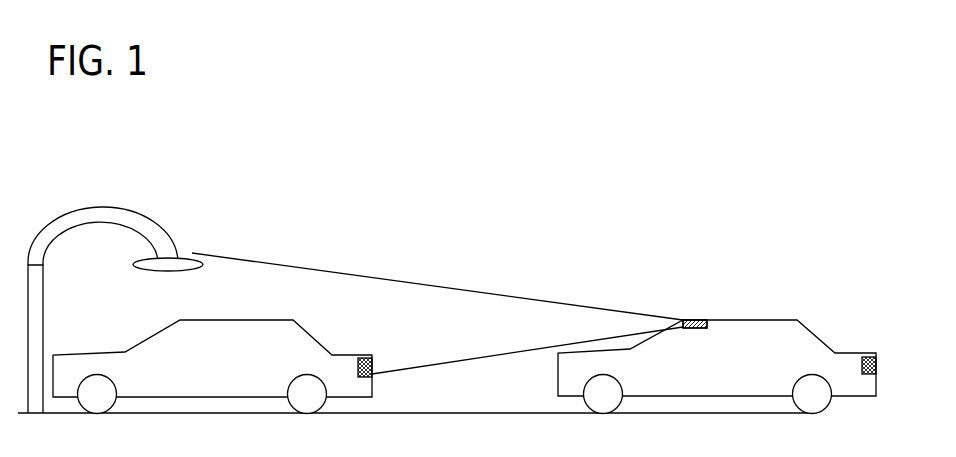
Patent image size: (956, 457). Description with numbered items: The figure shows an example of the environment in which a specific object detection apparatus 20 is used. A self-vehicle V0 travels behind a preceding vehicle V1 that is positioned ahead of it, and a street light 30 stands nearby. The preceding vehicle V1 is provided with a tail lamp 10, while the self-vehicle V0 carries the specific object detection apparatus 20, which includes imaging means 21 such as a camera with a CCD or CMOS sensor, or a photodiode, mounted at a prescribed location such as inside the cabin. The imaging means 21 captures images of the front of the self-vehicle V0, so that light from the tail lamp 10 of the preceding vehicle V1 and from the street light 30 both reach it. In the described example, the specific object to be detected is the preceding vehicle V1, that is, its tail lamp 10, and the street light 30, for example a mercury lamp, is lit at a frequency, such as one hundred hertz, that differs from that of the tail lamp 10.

The street light 30 is at (186, 261).
The tail lamp 10 is at (363, 358).
The specific object detection apparatus 20 is at (693, 320).
The imaging means 21 is at (695, 324).
The preceding vehicle V1 is at (230, 318).
The self-vehicle V0 is at (752, 315).